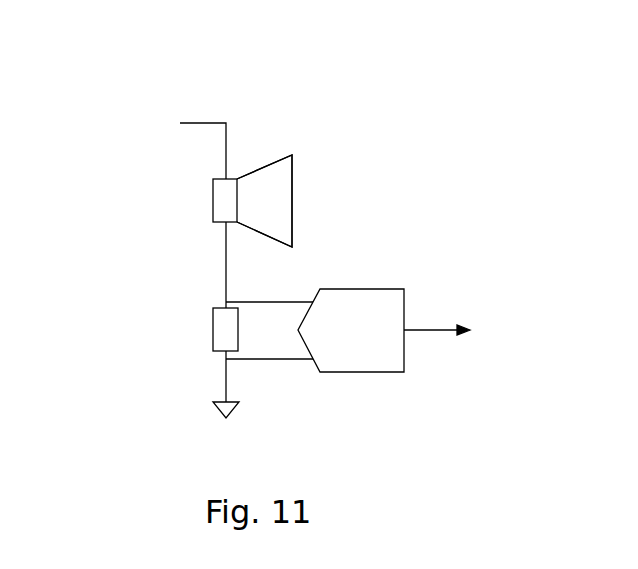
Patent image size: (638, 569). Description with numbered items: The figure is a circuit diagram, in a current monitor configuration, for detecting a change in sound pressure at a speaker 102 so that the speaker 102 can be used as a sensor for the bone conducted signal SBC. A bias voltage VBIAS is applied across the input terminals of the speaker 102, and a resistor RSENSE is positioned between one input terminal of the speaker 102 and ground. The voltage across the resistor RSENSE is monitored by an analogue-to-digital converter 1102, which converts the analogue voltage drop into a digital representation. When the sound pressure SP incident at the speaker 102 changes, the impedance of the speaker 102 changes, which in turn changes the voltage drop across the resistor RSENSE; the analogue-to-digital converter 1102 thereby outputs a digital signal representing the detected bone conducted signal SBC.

The speaker 102 is at (280, 161).
The analogue-to-digital converter 1102 is at (351, 330).
The bias voltage VBIAS is at (165, 144).
The sound pressure SP is at (315, 200).
The resistor RSENSE is at (186, 330).
The bone conducted signal SBC is at (444, 311).